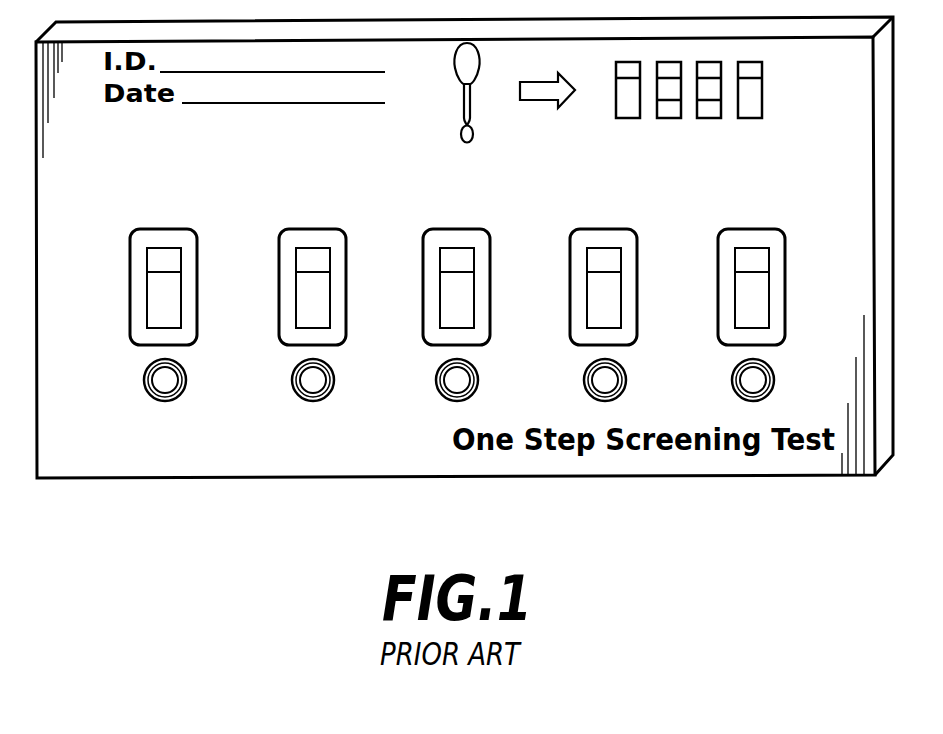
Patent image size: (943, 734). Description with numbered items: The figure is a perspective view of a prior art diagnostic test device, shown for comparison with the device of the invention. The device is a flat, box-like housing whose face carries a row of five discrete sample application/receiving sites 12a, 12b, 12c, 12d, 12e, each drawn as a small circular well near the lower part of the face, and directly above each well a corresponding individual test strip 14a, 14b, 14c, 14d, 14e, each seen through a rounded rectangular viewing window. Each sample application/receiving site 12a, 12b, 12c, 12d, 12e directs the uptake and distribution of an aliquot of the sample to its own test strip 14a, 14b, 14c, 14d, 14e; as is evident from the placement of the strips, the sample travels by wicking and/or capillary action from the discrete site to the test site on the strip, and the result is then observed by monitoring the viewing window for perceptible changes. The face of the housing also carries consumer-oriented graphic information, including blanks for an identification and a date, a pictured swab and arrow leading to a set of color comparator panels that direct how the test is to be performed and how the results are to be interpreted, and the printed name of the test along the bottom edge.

The sample application/receiving site 12a is at (160, 382).
The sample application/receiving site 12b is at (308, 381).
The sample application/receiving site 12c is at (455, 382).
The sample application/receiving site 12d is at (602, 380).
The sample application/receiving site 12e is at (748, 380).
The test strip 14a is at (160, 298).
The test strip 14b is at (310, 298).
The test strip 14c is at (460, 297).
The test strip 14d is at (607, 297).
The test strip 14e is at (755, 297).